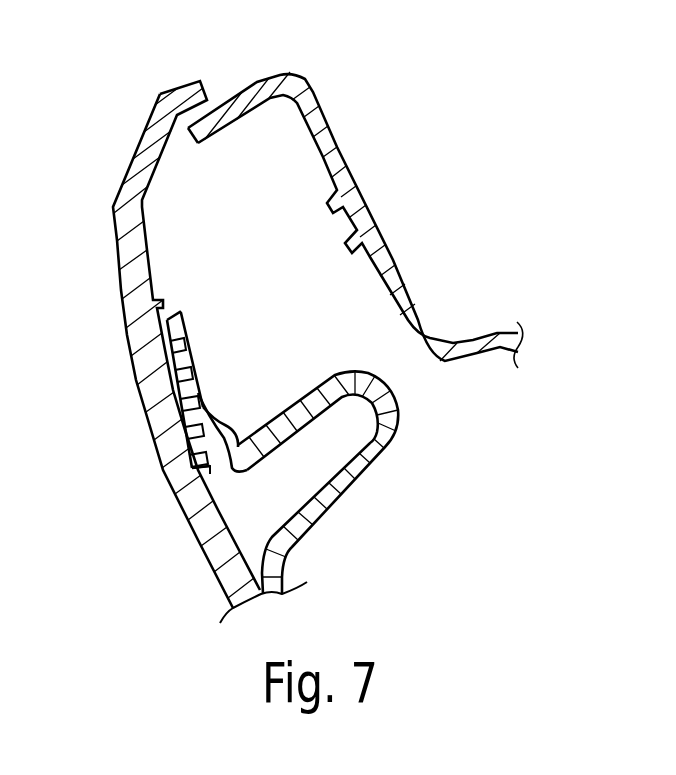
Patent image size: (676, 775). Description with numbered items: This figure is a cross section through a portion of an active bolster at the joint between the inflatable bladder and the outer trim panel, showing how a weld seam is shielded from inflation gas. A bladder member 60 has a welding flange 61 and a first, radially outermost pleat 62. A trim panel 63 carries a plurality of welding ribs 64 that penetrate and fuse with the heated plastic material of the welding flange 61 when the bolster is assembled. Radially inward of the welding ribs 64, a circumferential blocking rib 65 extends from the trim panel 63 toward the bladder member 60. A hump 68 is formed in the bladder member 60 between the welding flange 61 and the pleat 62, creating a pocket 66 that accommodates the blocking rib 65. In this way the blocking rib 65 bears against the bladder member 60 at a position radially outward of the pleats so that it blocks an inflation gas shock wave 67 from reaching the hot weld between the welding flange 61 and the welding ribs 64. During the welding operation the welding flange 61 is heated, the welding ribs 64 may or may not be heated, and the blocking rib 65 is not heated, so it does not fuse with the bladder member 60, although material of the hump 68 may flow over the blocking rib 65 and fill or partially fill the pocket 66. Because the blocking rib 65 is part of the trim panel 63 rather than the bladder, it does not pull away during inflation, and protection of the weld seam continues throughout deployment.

The bladder member 60 is at (371, 508).
The welding flange 61 is at (185, 330).
The first pleat 62 is at (361, 376).
The trim panel 63 is at (113, 220).
The welding ribs 64 is at (187, 427).
The blocking rib 65 is at (193, 462).
The pocket 66 is at (208, 474).
The inflation gas shock wave 67 is at (242, 503).
The hump 68 is at (215, 413).